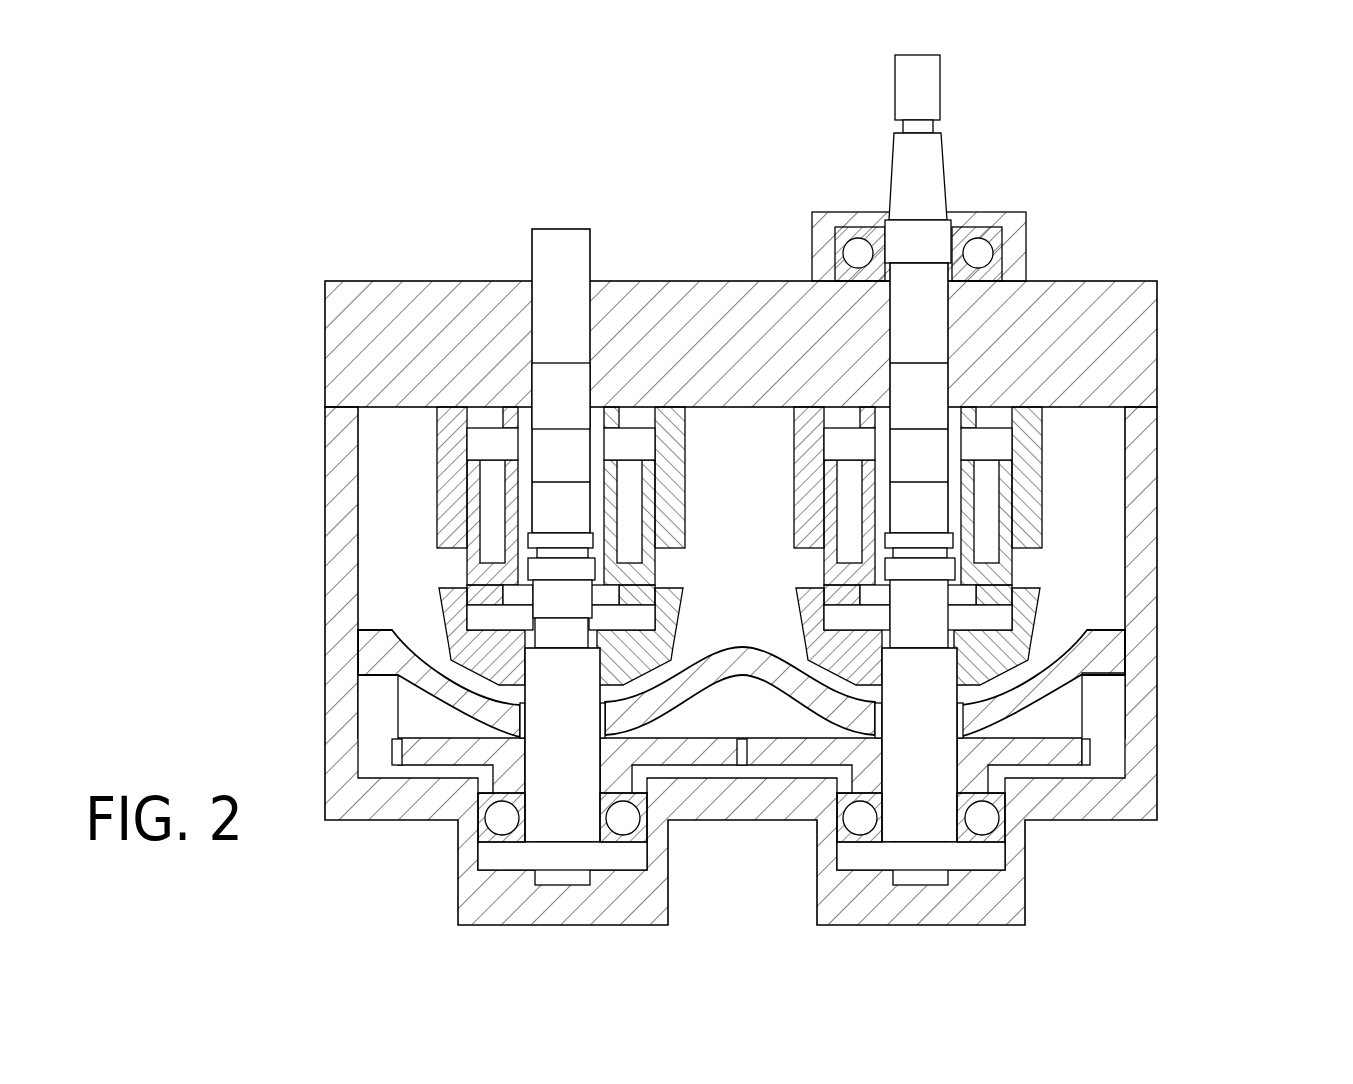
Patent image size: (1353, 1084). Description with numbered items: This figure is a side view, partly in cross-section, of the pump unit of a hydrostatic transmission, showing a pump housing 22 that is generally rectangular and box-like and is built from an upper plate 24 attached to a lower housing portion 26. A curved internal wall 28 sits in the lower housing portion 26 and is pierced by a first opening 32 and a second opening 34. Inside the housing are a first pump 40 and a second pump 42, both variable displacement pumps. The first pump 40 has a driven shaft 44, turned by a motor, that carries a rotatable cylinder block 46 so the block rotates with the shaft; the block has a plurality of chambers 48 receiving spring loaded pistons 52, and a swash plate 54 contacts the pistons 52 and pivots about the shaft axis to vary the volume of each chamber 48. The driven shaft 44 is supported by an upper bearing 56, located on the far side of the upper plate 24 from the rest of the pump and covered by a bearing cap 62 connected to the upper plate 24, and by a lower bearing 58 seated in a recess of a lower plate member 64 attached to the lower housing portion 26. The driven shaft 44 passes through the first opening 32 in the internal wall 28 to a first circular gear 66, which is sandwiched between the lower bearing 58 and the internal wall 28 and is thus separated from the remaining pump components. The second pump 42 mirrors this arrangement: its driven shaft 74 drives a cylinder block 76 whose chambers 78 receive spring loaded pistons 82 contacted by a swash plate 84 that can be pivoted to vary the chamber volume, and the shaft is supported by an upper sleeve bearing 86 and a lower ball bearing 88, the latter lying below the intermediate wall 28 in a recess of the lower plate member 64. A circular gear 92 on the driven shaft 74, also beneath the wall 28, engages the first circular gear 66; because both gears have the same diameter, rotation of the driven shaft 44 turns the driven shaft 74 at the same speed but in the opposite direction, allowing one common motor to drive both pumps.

The pump housing 22 is at (785, 490).
The upper plate 24 is at (1157, 293).
The lower housing portion 26 is at (1133, 700).
The curved internal wall 28 is at (787, 688).
The first opening 32 is at (963, 712).
The second opening 34 is at (520, 712).
The first pump 40 is at (1020, 546).
The second pump 42 is at (463, 546).
The driven shaft 44 is at (905, 325).
The rotatable cylinder block 46 is at (1032, 490).
The chambers 48 is at (1005, 448).
The spring loaded pistons 52 is at (1006, 538).
The swash plate 54 is at (1040, 601).
The upper bearing 56 is at (1007, 263).
The lower bearing 58 is at (1005, 832).
The bearing cap 62 is at (1010, 217).
The lower plate member 64 is at (1157, 770).
The first circular gear 66 is at (1040, 763).
The driven shaft 74 is at (534, 543).
The cylinder block 76 is at (447, 490).
The chambers 78 is at (473, 448).
The spring loaded pistons 82 is at (473, 538).
The swash plate 84 is at (440, 601).
The upper sleeve bearing 86 is at (557, 368).
The lower ball bearing 88 is at (480, 830).
The circular gear 92 is at (442, 768).